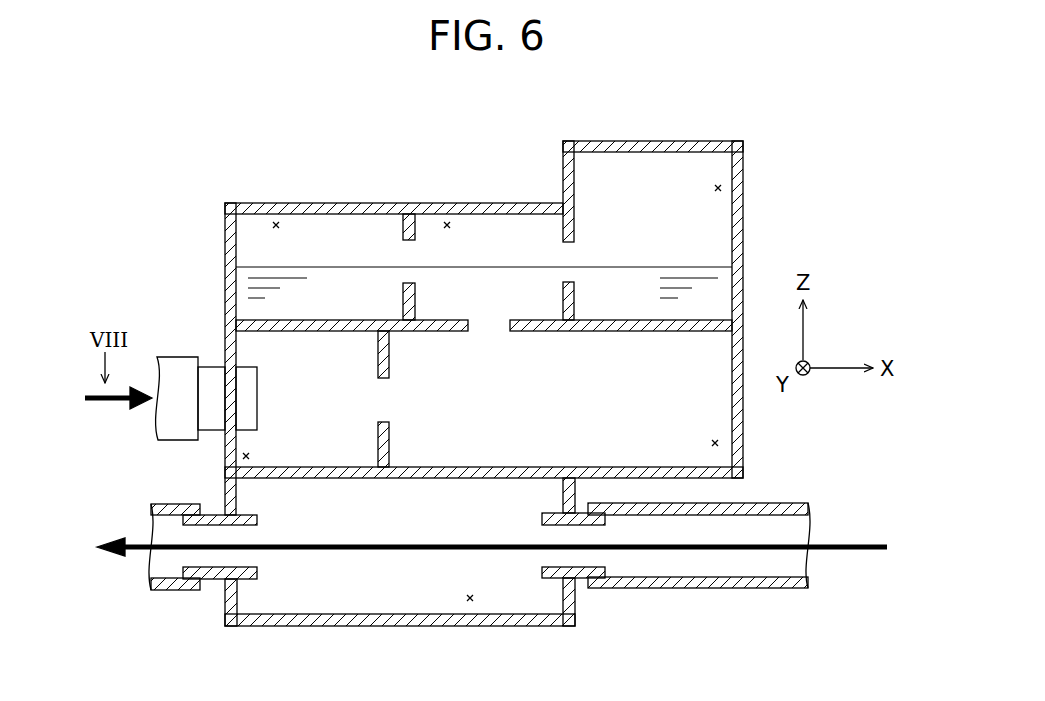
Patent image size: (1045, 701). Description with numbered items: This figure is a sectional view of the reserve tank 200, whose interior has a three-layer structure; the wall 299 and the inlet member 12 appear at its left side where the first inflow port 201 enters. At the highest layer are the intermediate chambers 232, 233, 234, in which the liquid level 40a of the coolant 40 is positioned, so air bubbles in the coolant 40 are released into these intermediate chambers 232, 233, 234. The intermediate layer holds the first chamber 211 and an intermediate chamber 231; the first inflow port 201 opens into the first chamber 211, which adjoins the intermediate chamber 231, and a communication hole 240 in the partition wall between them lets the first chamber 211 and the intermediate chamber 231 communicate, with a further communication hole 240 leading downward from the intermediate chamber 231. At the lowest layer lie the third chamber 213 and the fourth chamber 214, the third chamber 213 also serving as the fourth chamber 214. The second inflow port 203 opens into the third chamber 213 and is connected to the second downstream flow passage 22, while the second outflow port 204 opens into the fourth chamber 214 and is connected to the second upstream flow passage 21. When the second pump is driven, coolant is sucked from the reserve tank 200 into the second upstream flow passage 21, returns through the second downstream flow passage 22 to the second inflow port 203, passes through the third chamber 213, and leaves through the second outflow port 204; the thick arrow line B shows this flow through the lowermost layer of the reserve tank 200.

The reserve tank 200 is at (218, 182).
The left wall 299 is at (227, 242).
The intermediate chamber 232 is at (276, 222).
The intermediate chamber 233 is at (447, 222).
The intermediate chamber 234 is at (722, 188).
The intermediate chamber 231 is at (718, 443).
The liquid level 40a is at (360, 265).
The coolant 40 is at (702, 267).
The communication hole 240 is at (408, 240).
The first chamber 211 is at (246, 456).
The inlet pipe (10) 12 is at (175, 355).
The first inflow port 201 is at (217, 367).
The second outflow port 204 is at (215, 580).
The second inflow port 203 is at (583, 578).
The third chamber 213 is at (400, 626).
The fourth chamber 214 is at (470, 598).
The second upstream flow passage 21 is at (175, 592).
The second downstream flow passage 22 is at (710, 592).
The thick arrow line B is at (830, 552).